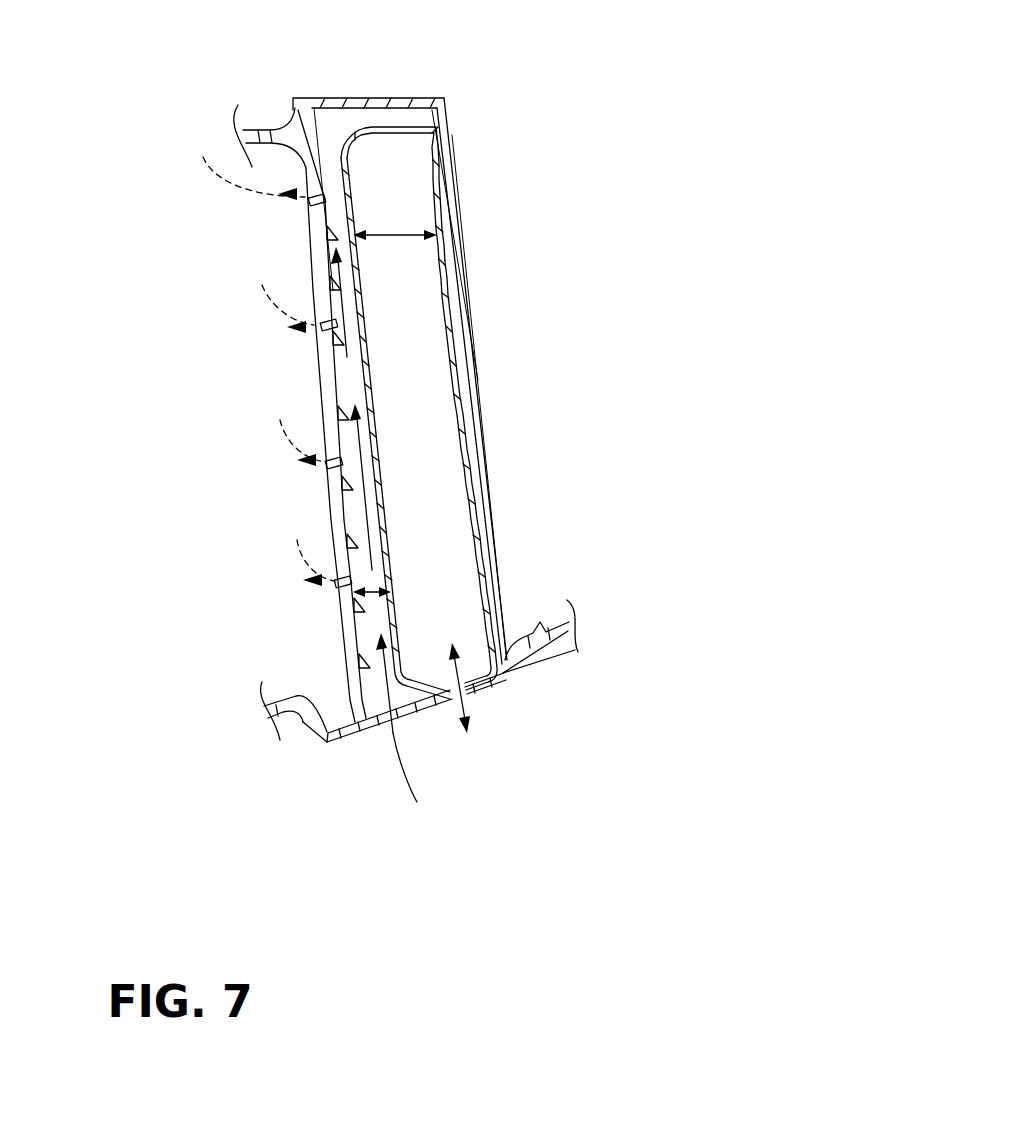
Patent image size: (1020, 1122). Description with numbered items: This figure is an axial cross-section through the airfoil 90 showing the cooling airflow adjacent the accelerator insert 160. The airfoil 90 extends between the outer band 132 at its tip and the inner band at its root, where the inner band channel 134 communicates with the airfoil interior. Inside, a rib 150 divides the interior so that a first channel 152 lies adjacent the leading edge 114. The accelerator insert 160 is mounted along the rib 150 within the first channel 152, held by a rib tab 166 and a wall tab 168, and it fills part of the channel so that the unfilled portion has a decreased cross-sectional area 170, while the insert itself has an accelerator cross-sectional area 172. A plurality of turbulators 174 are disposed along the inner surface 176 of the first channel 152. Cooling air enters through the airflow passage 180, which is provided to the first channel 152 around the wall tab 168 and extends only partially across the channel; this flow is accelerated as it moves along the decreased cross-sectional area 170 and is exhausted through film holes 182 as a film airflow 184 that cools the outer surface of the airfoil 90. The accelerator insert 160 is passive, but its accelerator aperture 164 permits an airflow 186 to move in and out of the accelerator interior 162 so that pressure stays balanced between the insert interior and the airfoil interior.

The airfoil 90 is at (592, 160).
The leading edge 114 is at (315, 257).
The outer band 132 is at (267, 128).
The inner band channel 134 is at (302, 713).
The rib 150 is at (460, 212).
The first channel 152 is at (386, 112).
The accelerator insert 160 is at (418, 708).
The accelerator interior 162 is at (399, 410).
The accelerator aperture 164 is at (484, 705).
The rib tab 166 is at (580, 648).
The wall tab 168 is at (328, 735).
The decreased cross-sectional area 170 is at (399, 628).
The accelerator cross-sectional area 172 is at (401, 235).
The turbulators 174 is at (352, 630).
The inner surface 176 is at (276, 387).
The airflow passage 180 is at (348, 316).
The film holes 182 is at (322, 336).
The film airflow 184 is at (250, 358).
The airflow 186 is at (501, 667).